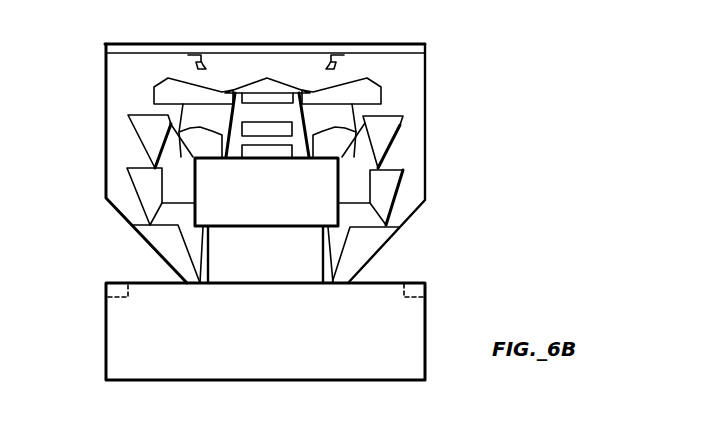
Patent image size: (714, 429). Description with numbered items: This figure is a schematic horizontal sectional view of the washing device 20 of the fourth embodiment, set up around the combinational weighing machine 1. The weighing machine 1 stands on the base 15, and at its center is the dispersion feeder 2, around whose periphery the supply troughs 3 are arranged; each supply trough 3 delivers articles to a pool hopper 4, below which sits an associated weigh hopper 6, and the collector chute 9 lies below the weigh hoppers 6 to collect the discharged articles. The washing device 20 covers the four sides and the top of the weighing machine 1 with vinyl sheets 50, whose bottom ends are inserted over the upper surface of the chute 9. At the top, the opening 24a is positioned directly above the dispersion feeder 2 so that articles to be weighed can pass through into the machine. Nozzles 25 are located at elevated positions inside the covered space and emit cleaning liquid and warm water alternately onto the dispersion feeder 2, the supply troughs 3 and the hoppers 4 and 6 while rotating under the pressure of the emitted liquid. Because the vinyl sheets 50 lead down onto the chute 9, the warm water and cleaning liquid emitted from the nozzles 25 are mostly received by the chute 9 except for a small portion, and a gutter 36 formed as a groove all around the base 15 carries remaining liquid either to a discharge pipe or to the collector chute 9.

The combinational weighing machine 1 is at (268, 202).
The dispersion feeder 2 is at (287, 90).
The supply trough 3 is at (368, 90).
The pool hopper 4 is at (387, 130).
The weigh hopper 6 is at (387, 180).
The collector chute 9 is at (168, 250).
The base 15 is at (106, 343).
The washing device 20 is at (355, 44).
The opening 24a is at (247, 50).
The nozzle 25 is at (190, 70).
The gutter 36 is at (106, 306).
The vinyl sheet 50 is at (106, 108).